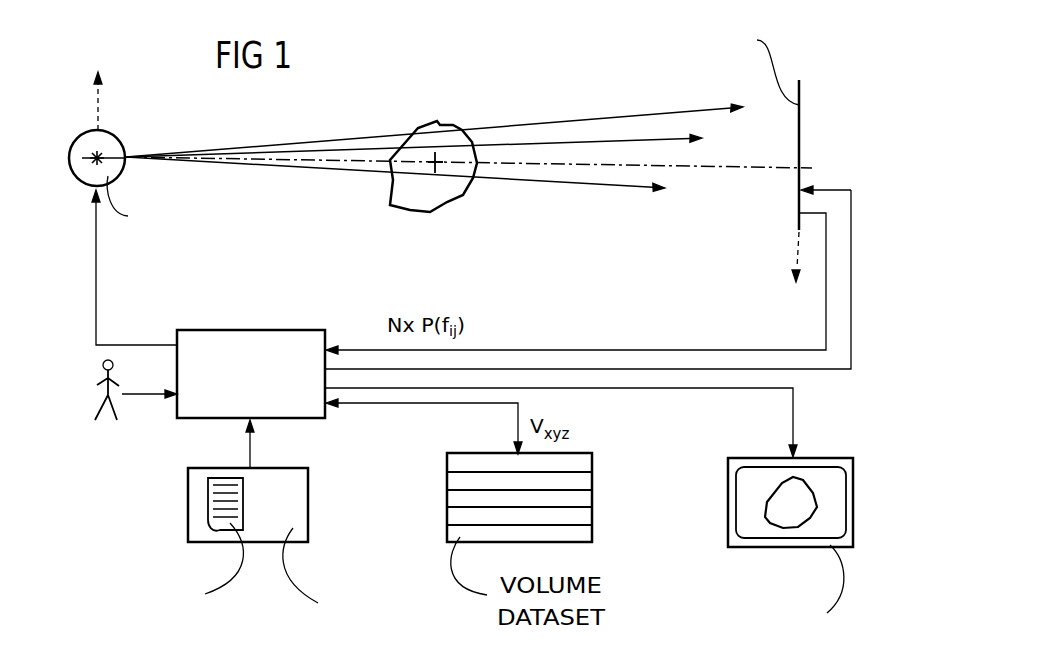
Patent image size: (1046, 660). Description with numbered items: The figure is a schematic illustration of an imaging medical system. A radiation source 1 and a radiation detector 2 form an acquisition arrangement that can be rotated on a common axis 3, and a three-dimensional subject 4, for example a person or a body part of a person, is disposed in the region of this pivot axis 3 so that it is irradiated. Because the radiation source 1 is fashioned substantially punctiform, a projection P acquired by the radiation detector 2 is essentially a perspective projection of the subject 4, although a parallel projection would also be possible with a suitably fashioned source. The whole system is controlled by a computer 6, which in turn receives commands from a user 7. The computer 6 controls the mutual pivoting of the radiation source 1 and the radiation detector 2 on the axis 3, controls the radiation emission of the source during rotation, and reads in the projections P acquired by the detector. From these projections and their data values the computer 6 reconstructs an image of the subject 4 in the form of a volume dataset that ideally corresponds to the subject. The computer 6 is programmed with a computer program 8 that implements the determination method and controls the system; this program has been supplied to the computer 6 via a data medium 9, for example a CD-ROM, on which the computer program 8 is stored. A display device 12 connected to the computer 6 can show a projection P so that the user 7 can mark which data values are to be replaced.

The radiation source 1 is at (111, 132).
The radiation detector 2 is at (799, 120).
The common axis 3 is at (437, 173).
The three-dimensional subject 4 is at (390, 187).
The computer 6 is at (254, 330).
The user 7 is at (95, 395).
The computer program 8 is at (243, 497).
The data medium 9 is at (188, 502).
The display device 12 is at (728, 500).